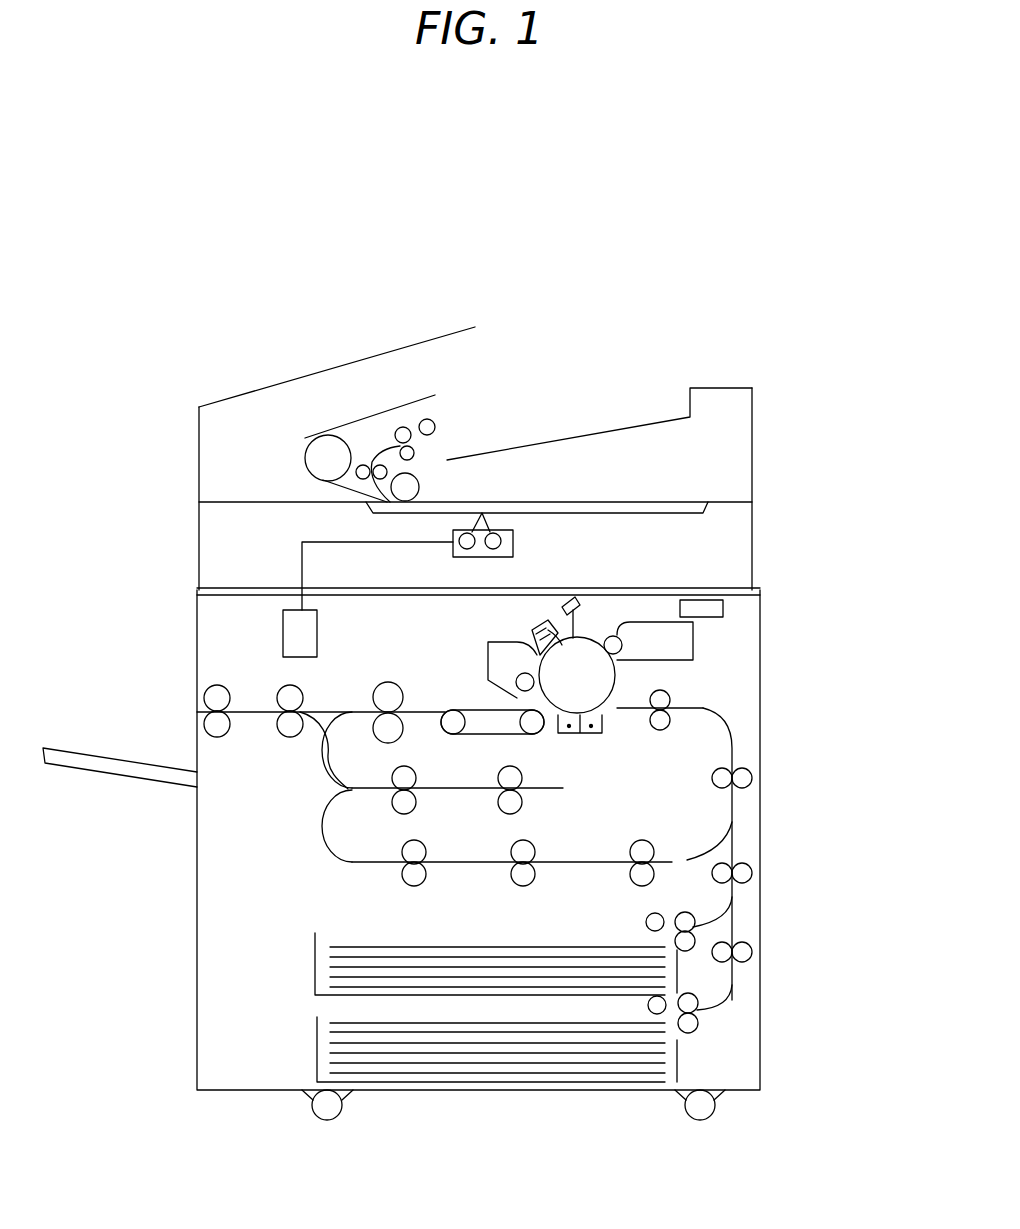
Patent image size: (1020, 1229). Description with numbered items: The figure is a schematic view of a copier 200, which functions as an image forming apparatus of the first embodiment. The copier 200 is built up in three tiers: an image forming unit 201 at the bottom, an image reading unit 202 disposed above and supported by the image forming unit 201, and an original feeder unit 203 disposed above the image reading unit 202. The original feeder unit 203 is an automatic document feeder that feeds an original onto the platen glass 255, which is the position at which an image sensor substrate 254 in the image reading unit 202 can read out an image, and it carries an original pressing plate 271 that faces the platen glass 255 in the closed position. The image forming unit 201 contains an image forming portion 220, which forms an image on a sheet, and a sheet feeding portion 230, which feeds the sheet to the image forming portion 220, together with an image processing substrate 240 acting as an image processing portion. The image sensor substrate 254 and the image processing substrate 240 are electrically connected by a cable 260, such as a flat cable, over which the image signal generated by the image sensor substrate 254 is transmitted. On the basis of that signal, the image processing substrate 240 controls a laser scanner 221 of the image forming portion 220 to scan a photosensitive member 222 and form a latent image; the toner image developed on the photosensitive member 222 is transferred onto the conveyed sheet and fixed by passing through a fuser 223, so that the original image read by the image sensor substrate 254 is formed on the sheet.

The copier 200 is at (450, 222).
The image forming unit 201 is at (780, 651).
The image reading unit 202 is at (770, 553).
The original feeder unit 203 is at (604, 360).
The image forming portion 220 is at (658, 573).
The laser scanner 221 is at (711, 612).
The photosensitive member 222 is at (548, 630).
The fuser 223 is at (386, 682).
The sheet feeding portion 230 is at (752, 1003).
The image processing substrate 240 is at (283, 640).
The image sensor substrate 254 is at (466, 530).
The platen glass 255 is at (640, 502).
The cable 260 is at (300, 555).
The original pressing plate 271 is at (533, 513).